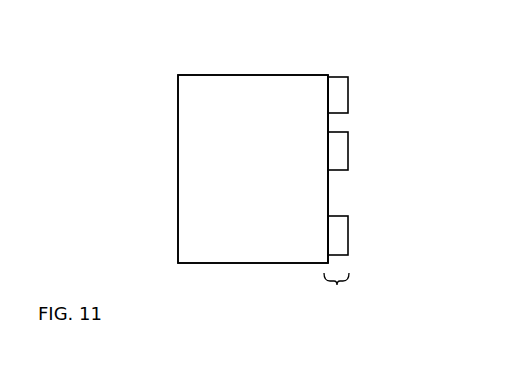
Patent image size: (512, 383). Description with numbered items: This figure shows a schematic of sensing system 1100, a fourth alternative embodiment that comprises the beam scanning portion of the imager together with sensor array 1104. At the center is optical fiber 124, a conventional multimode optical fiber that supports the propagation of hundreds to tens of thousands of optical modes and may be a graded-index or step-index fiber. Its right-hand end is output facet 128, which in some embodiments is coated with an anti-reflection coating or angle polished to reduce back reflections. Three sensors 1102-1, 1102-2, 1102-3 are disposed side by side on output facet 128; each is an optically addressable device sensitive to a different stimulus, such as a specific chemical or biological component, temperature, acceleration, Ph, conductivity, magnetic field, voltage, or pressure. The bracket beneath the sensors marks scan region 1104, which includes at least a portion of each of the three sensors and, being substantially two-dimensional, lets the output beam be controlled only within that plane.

The sensing system 1100 is at (130, 57).
The optical fiber 124 is at (253, 169).
The output facet 128 is at (327, 80).
The sensor 1102-1 is at (348, 88).
The sensor 1102-2 is at (348, 143).
The sensor 1102-3 is at (348, 227).
The sensor array 1104 is at (333, 297).